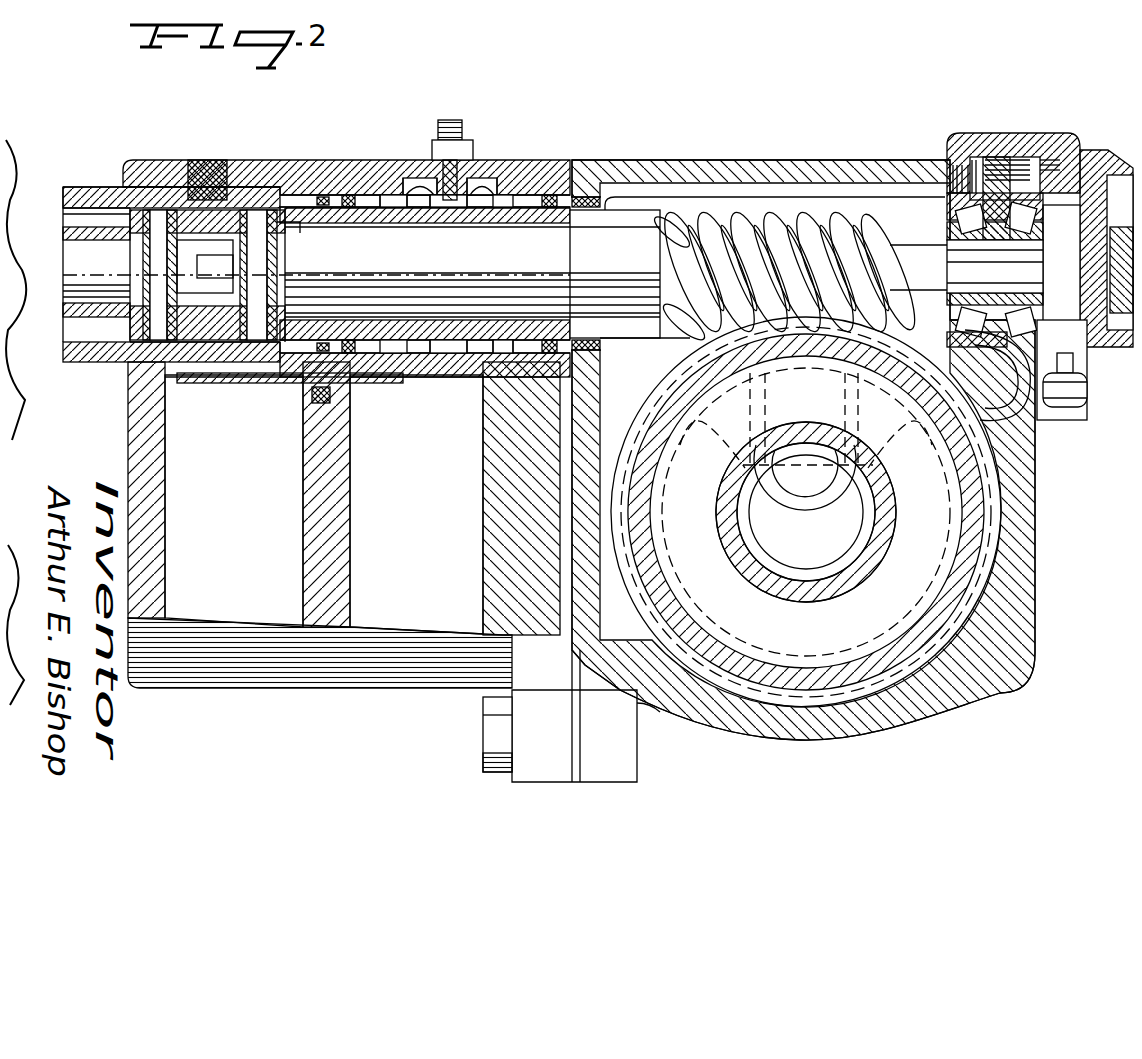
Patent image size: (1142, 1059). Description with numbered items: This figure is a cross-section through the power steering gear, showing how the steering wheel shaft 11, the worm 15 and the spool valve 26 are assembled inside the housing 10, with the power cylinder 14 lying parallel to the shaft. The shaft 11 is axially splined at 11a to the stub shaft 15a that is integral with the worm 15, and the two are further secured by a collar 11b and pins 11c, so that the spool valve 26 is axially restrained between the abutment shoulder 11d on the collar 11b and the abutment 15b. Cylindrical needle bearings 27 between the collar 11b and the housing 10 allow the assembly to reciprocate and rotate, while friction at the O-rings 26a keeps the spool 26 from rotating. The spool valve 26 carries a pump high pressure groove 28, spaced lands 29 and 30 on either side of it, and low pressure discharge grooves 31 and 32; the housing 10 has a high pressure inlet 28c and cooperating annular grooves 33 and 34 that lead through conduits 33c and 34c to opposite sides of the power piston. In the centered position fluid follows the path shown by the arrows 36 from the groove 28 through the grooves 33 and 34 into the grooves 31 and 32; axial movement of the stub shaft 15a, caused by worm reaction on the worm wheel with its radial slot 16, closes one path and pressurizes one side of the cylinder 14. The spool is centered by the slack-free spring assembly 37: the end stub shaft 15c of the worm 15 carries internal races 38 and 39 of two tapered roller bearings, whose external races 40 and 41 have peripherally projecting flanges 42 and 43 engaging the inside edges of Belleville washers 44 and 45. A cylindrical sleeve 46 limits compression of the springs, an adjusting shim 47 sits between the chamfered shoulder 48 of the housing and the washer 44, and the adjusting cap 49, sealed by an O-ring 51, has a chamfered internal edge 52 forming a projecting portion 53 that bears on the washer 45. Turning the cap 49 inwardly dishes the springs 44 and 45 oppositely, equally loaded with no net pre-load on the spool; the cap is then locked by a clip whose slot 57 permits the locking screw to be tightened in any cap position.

The housing 10 is at (313, 162).
The steering wheel shaft 11 is at (85, 292).
The axial spline 11a is at (160, 263).
The collar 11b is at (183, 330).
The pins 11c is at (160, 265).
The abutment shoulder 11d is at (290, 222).
The power cylinder 14 is at (148, 437).
The worm 15 is at (758, 210).
The stub shaft 15a is at (385, 273).
The abutment 15b is at (572, 228).
The end stub shaft 15c is at (960, 263).
The radial slot 16 is at (845, 380).
The spool valve 26 is at (545, 197).
The O-rings 26a is at (345, 197).
The cylindrical needle bearings 27 is at (295, 383).
The pump high pressure groove 28 is at (455, 200).
The high pressure inlet 28c is at (445, 195).
The land 29 is at (380, 353).
The land 30 is at (478, 345).
The low pressure discharge groove 31 is at (398, 207).
The low pressure discharge groove 32 is at (495, 195).
The annular groove 33 is at (407, 363).
The conduit 33c is at (243, 377).
The annular groove 34 is at (478, 355).
The conduit 34c is at (470, 380).
The arrows 36 is at (437, 207).
The spring assembly 37 is at (985, 132).
The internal race 38 is at (955, 223).
The internal race 39 is at (1012, 225).
The external race 40 is at (950, 200).
The external race 41 is at (1048, 162).
The peripherally projecting flange 42 is at (1005, 170).
The peripherally projecting flange 43 is at (1020, 175).
The Belleville washer 44 is at (968, 205).
The Belleville washer 45 is at (1035, 163).
The cylindrical sleeve 46 is at (1000, 160).
The adjusting shim 47 is at (960, 185).
The chamfered shoulder 48 is at (955, 195).
The adjusting cap 49 is at (1125, 240).
The O-ring 51 is at (1065, 160).
The internal edge 52 is at (1045, 160).
The projecting portion 53 is at (1030, 160).
The slot 57 is at (1065, 410).